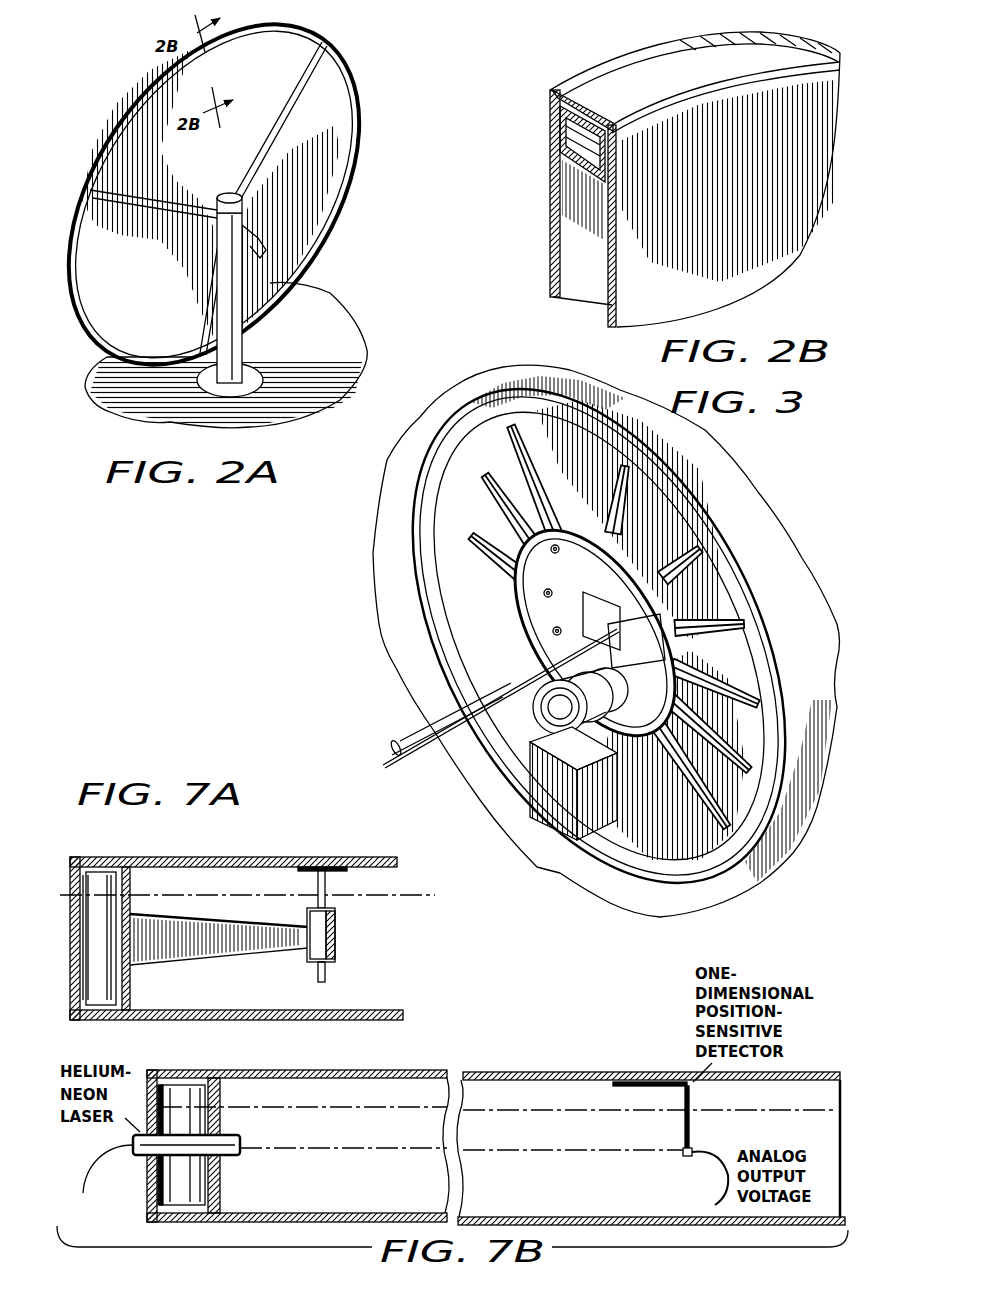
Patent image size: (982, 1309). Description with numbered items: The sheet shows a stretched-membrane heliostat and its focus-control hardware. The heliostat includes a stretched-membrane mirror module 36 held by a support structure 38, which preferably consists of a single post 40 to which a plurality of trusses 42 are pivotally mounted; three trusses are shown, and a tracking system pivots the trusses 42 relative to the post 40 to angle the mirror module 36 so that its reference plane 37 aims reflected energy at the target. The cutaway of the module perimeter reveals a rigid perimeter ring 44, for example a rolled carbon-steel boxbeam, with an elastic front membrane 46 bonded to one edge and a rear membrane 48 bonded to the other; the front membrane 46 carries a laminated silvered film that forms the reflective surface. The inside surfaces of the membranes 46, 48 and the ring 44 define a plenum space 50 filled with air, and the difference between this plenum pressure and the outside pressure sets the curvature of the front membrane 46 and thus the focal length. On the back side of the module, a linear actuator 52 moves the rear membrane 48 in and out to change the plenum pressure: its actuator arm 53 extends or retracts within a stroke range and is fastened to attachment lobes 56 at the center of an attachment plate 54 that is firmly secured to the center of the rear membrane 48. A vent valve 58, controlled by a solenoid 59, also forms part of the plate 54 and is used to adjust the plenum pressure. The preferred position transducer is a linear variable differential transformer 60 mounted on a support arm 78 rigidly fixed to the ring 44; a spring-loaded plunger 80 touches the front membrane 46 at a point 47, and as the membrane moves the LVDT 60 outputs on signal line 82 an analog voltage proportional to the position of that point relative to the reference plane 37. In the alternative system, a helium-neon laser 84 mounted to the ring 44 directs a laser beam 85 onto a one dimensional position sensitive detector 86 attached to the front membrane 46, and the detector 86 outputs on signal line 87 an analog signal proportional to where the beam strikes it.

In FIG. 2A, the stretched-membrane mirror module 36 is at (76, 312).
In FIG. 2A, the support structure 38 is at (187, 362).
In FIG. 2A, the post 40 is at (242, 290).
In FIG. 2A, the trusses 42 is at (285, 105).
In FIG. 2B, the perimeter ring 44 is at (553, 155).
In FIG. 7A, the perimeter ring 44 is at (118, 837).
In FIG. 7B, the perimeter ring 44 is at (188, 1078).
In FIG. 2B, the front membrane 46 is at (552, 193).
In FIG. 7A, the front membrane 46 is at (185, 837).
In FIG. 7B, the front membrane 46 is at (327, 1070).
In FIG. 2B, the rear membrane 48 is at (640, 298).
In FIG. 3, the rear membrane 48 is at (804, 571).
In FIG. 7A, the rear membrane 48 is at (133, 1020).
In FIG. 7B, the rear membrane 48 is at (322, 1200).
In FIG. 2B, the plenum space 50 is at (582, 234).
In FIG. 3, the linear actuator 52 is at (480, 721).
In FIG. 3, the actuator arm 53 is at (524, 668).
In FIG. 3, the attachment plate 54 is at (698, 527).
In FIG. 3, the attachment lobes 56 is at (560, 485).
In FIG. 3, the vent valve 58 is at (540, 735).
In FIG. 3, the solenoid 59 is at (545, 805).
In FIG. 7A, the reference plane 37 is at (408, 876).
In FIG. 7B, the reference plane 37 is at (525, 1110).
In FIG. 7A, the point on the front membrane 47 is at (312, 858).
In FIG. 7A, the linear variable differential transformer 60 is at (336, 928).
In FIG. 7A, the support arm 78 is at (250, 955).
In FIG. 7A, the plunger 80 is at (316, 878).
In FIG. 7A, the signal line 82 is at (353, 976).
In FIG. 7B, the helium-neon laser 84 is at (240, 1158).
In FIG. 7B, the laser beam 85 is at (408, 1122).
In FIG. 7B, the one dimensional position sensitive detector 86 is at (683, 1100).
In FIG. 7B, the signal line 87 is at (718, 1177).